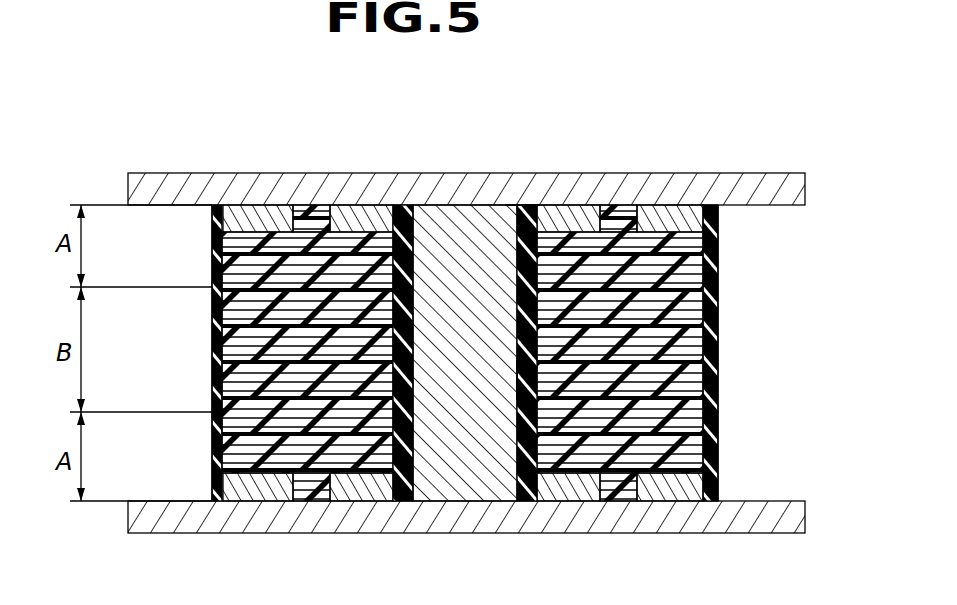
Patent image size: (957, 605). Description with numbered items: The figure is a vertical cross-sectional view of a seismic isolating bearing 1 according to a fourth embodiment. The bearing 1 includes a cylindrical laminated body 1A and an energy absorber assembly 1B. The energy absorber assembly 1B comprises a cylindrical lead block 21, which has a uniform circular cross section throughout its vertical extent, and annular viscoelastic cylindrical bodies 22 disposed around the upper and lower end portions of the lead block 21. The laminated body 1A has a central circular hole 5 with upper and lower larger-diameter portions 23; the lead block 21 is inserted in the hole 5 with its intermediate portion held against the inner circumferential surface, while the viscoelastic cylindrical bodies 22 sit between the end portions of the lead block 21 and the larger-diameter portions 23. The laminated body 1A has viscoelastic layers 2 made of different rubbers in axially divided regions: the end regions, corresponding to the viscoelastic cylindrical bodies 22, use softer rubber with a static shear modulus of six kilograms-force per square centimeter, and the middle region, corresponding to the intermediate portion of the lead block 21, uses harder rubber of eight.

The seismic isolating bearing 1 is at (754, 170).
The cylindrical laminated body 1A is at (730, 322).
The energy absorber assembly 1B is at (514, 192).
The viscoelastic layers 2 is at (707, 345).
The central circular hole 5 is at (515, 382).
The cylindrical lead block 21 is at (458, 220).
The viscoelastic cylindrical bodies 22 is at (527, 212).
The larger-diameter portions 23 is at (405, 240).